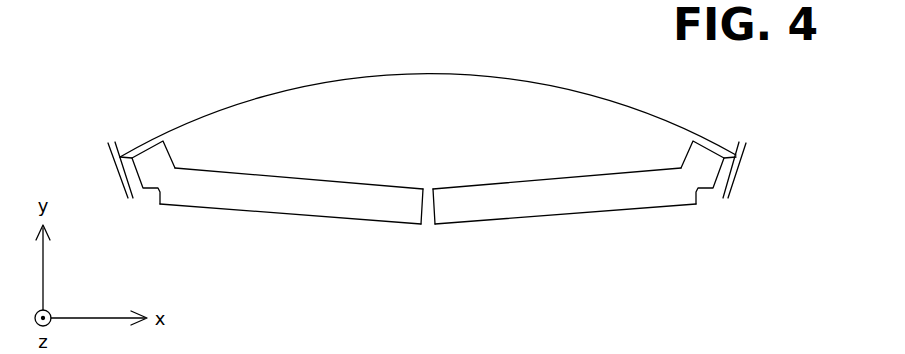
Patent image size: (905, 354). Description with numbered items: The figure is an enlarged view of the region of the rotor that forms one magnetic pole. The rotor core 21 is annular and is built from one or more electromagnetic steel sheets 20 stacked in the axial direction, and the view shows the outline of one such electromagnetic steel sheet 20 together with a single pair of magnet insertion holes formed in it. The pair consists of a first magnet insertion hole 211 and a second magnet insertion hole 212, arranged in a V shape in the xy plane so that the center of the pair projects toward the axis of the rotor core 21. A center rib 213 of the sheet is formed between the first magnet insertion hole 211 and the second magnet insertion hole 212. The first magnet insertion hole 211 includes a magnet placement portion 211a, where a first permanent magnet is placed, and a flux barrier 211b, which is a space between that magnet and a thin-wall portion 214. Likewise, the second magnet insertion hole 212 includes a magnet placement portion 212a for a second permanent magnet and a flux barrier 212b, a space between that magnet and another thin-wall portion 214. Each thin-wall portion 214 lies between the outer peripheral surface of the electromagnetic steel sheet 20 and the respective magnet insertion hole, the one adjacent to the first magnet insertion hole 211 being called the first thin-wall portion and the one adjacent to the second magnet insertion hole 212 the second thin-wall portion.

The electromagnetic steel sheet 20 is at (508, 80).
The rotor core 21 is at (245, 72).
The first magnet insertion hole 211 is at (222, 145).
The magnet placement portion 211a is at (308, 195).
The flux barrier 211b is at (160, 163).
The second magnet insertion hole 212 is at (634, 145).
The magnet placement portion 212a is at (550, 197).
The flux barrier 212b is at (696, 163).
The center rib 213 is at (430, 221).
The thin-wall portion 214 is at (143, 150).